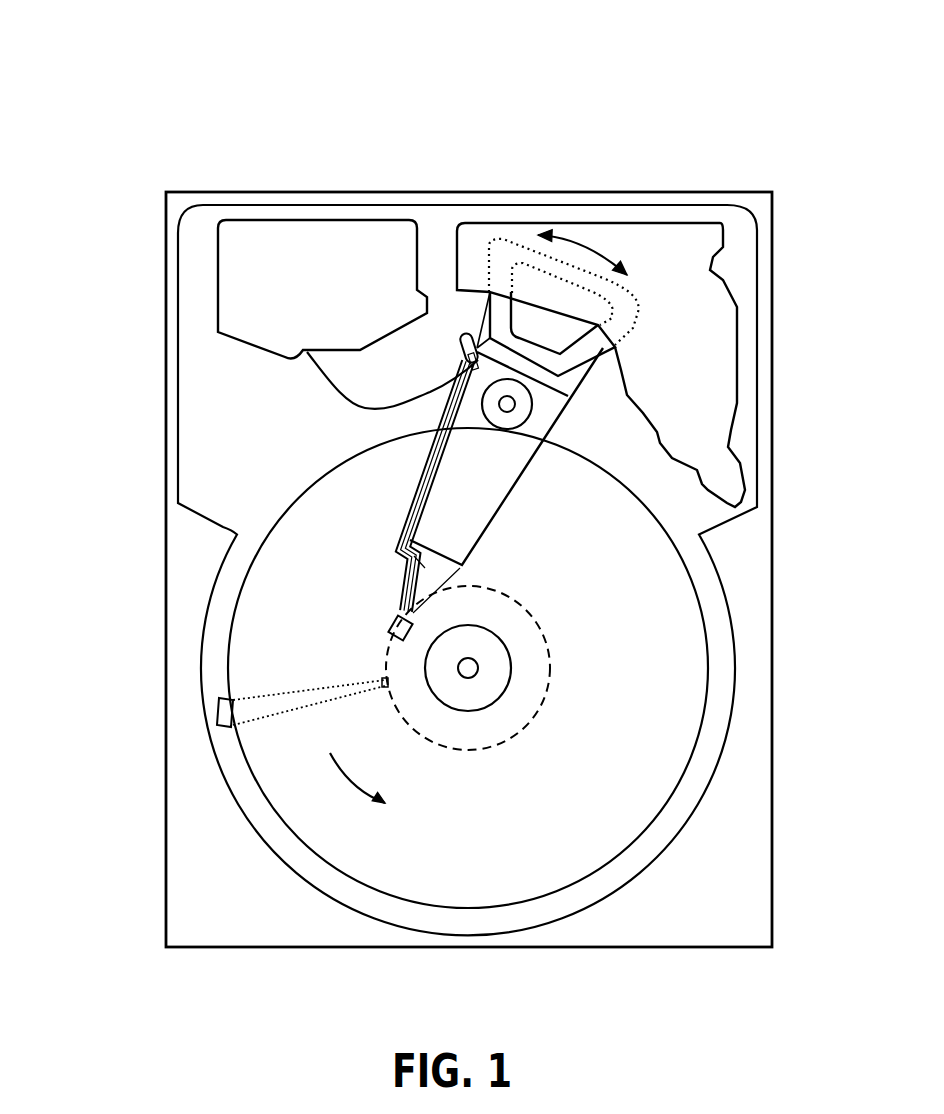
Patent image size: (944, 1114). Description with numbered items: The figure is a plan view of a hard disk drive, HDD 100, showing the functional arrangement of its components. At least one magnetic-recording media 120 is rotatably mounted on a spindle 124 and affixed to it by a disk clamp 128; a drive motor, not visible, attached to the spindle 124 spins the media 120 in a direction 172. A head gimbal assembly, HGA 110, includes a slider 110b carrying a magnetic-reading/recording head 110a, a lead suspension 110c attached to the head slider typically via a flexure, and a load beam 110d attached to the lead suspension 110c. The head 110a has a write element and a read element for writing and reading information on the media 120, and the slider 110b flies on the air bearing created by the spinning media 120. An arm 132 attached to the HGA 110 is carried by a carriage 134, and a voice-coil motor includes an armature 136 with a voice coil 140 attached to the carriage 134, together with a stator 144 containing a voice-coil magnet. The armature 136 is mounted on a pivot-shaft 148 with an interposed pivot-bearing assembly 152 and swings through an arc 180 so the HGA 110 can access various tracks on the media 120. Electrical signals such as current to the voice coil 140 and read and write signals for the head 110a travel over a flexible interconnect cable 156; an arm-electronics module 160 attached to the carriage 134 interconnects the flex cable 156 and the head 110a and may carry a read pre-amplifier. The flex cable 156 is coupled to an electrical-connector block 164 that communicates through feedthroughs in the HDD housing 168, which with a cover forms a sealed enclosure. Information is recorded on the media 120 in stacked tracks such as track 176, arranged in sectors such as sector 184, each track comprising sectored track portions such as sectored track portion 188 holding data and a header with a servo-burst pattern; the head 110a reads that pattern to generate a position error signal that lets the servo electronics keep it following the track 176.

The hard disk drive 100 is at (103, 83).
The head gimbal assembly 110 is at (255, 501).
The magnetic-reading/recording head 110a is at (393, 630).
The slider 110b is at (412, 605).
The lead suspension 110c is at (413, 580).
The load beam 110d is at (400, 552).
The magnetic-recording media 120 is at (645, 622).
The spindle 124 is at (470, 668).
The disk clamp 128 is at (493, 683).
The arm 132 is at (460, 512).
The carriage 134 is at (523, 433).
The armature 136 is at (485, 330).
The voice coil 140 is at (502, 303).
The stator 144 is at (707, 310).
The pivot-shaft 148 is at (513, 403).
The pivot-bearing assembly 152 is at (520, 415).
The flexible interconnect cable 156 is at (340, 378).
The arm-electronics module 160 is at (458, 370).
The electrical-connector block 164 is at (240, 288).
The HDD housing 168 is at (753, 204).
The direction 172 is at (368, 782).
The track 176 is at (543, 630).
The arc 180 is at (577, 240).
The sector 184 is at (215, 712).
The sectored track portion 188 is at (383, 680).